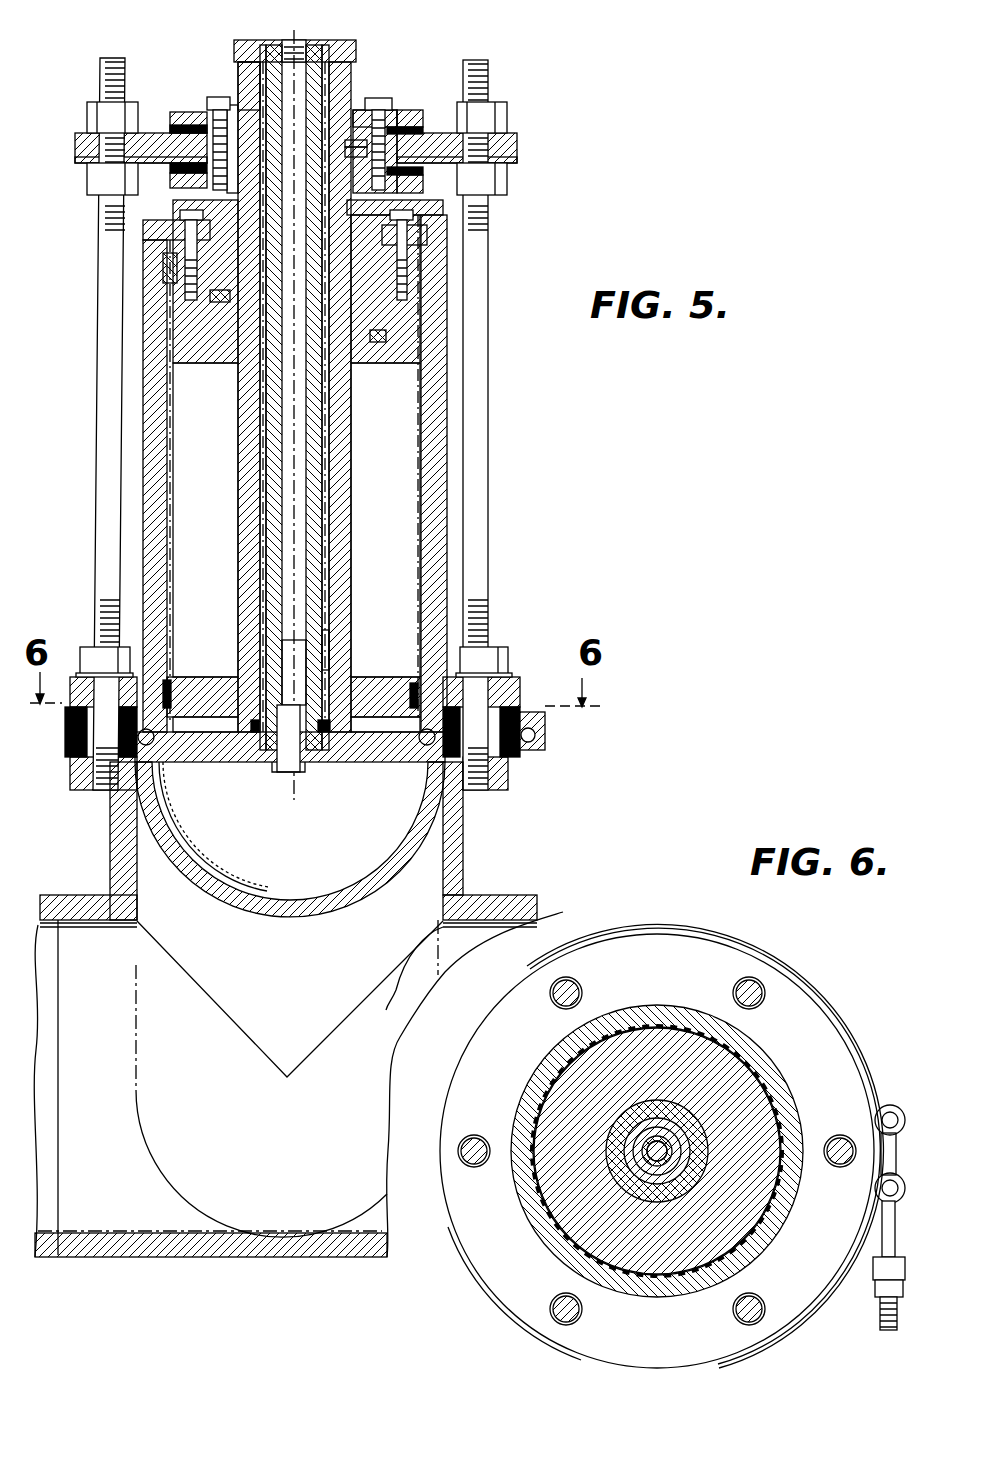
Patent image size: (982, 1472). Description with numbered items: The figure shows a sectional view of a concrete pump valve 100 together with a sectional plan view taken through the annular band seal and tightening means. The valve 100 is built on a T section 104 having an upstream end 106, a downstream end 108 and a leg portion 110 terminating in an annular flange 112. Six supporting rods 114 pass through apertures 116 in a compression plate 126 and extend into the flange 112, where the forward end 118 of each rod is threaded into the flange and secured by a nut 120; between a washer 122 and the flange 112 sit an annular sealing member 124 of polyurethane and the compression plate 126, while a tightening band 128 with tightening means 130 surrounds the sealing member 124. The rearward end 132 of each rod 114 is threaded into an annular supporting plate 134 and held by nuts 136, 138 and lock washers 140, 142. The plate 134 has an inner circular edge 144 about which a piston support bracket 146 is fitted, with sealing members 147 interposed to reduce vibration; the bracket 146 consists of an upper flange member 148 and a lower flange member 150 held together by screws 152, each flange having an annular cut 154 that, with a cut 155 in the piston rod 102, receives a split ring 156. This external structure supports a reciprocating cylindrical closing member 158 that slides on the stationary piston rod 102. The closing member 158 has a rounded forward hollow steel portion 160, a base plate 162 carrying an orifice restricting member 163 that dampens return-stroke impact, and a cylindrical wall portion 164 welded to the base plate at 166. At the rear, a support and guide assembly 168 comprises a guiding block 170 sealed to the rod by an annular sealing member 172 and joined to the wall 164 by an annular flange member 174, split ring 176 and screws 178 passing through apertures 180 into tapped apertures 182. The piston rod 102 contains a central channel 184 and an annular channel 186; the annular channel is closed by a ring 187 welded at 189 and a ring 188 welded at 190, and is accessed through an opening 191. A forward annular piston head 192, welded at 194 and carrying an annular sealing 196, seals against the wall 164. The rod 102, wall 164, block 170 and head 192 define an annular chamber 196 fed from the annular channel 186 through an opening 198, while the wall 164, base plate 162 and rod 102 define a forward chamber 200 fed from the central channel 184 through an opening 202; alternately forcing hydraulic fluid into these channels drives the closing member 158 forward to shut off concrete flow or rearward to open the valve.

In FIG. 5, the concrete valve 100 is at (506, 478).
In FIG. 5, the piston rod 102 is at (340, 472).
In FIG. 6, the piston rod 102 is at (651, 1158).
In FIG. 5, the T section 104 is at (500, 893).
In FIG. 5, the upstream end 106 is at (37, 945).
In FIG. 5, the downstream end 108 is at (525, 922).
In FIG. 5, the leg portion 110 is at (465, 840).
In FIG. 5, the annular flange 112 is at (80, 778).
In FIG. 5, the supporting rods 114 is at (110, 452).
In FIG. 6, the supporting rods 114 is at (570, 987).
In FIG. 5, the apertures 116 is at (97, 650).
In FIG. 5, the forward end 118 is at (100, 790).
In FIG. 5, the nut 120 is at (85, 652).
In FIG. 5, the washer 122 is at (76, 673).
In FIG. 5, the annular sealing member 124 is at (520, 745).
In FIG. 6, the annular sealing member 124 is at (690, 945).
In FIG. 5, the compression plate 126 is at (525, 712).
In FIG. 5, the tightening band 128 is at (68, 722).
In FIG. 6, the tightening band 128 is at (770, 950).
In FIG. 5, the tightening means 130 is at (545, 737).
In FIG. 6, the tightening means 130 is at (898, 1255).
In FIG. 5, the rearward end 132 is at (107, 63).
In FIG. 5, the annular supporting plate 134 is at (82, 135).
In FIG. 5, the nut 136 is at (95, 108).
In FIG. 5, the nut 138 is at (87, 183).
In FIG. 5, the lock washer 140 is at (90, 118).
In FIG. 5, the lock washer 142 is at (85, 161).
In FIG. 5, the inner circular edge 144 is at (176, 114).
In FIG. 5, the piston support bracket 146 is at (412, 105).
In FIG. 5, the sealing members 147 is at (425, 125).
In FIG. 5, the upper flange member 148 is at (176, 127).
In FIG. 5, the lower flange member 150 is at (172, 188).
In FIG. 5, the screws 152 is at (212, 99).
In FIG. 5, the annular cut 154 is at (352, 152).
In FIG. 5, the cut 155 is at (358, 143).
In FIG. 5, the split ring 156 is at (232, 104).
In FIG. 5, the cylindrical closing member 158 is at (145, 405).
In FIG. 5, the rounded forward hollow steel portion 160 is at (252, 910).
In FIG. 5, the base plate 162 is at (250, 764).
In FIG. 5, the orifice restricting member 163 is at (300, 695).
In FIG. 6, the orifice restricting member 163 is at (659, 1168).
In FIG. 5, the cylindrical wall portion 164 is at (432, 425).
In FIG. 6, the cylindrical wall portion 164 is at (782, 1092).
In FIG. 5, the weld 166 is at (425, 745).
In FIG. 5, the rearward support and guide assembly 168 is at (440, 262).
In FIG. 5, the guiding block 170 is at (180, 345).
In FIG. 5, the annular sealing member 172 is at (349, 207).
In FIG. 5, the annular flange member 174 is at (150, 232).
In FIG. 5, the split ring 176 is at (165, 262).
In FIG. 5, the screws 178 is at (182, 213).
In FIG. 5, the apertures 180 is at (405, 240).
In FIG. 5, the tapped apertures 182 is at (212, 298).
In FIG. 5, the central channel 184 is at (248, 530).
In FIG. 5, the annular channel 186 is at (322, 560).
In FIG. 6, the annular channel 186 is at (644, 1160).
In FIG. 5, the ring 187 is at (340, 46).
In FIG. 5, the ring 188 is at (330, 642).
In FIG. 5, the weld 189 is at (332, 40).
In FIG. 5, the weld 190 is at (322, 737).
In FIG. 5, the opening 191 is at (246, 65).
In FIG. 5, the forward annular piston head 192 is at (220, 690).
In FIG. 6, the forward annular piston head 192 is at (753, 1071).
In FIG. 5, the weld 194 is at (330, 708).
In FIG. 5, the annular chamber 196 is at (195, 490).
In FIG. 6, the annular chamber 196 is at (741, 1083).
In FIG. 5, the opening 198 is at (240, 690).
In FIG. 5, the forward chamber 200 is at (365, 722).
In FIG. 5, the opening 202 is at (288, 774).